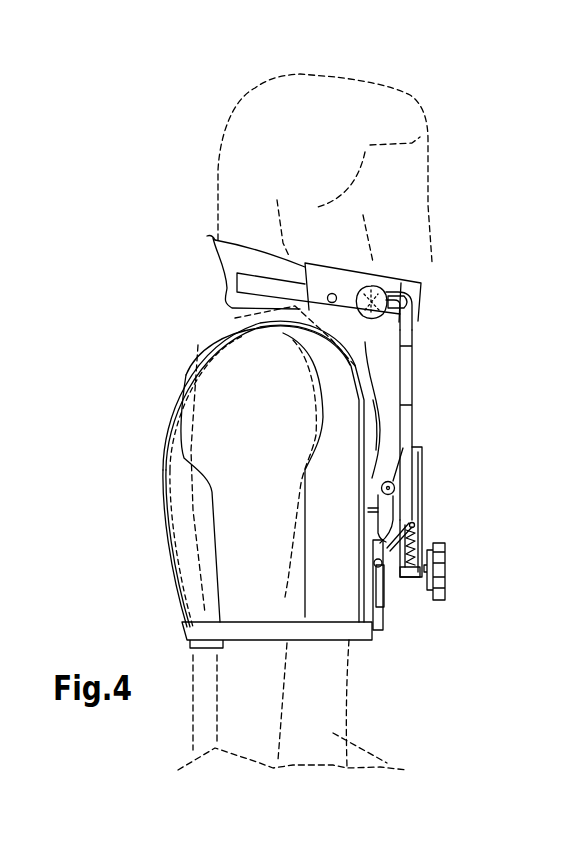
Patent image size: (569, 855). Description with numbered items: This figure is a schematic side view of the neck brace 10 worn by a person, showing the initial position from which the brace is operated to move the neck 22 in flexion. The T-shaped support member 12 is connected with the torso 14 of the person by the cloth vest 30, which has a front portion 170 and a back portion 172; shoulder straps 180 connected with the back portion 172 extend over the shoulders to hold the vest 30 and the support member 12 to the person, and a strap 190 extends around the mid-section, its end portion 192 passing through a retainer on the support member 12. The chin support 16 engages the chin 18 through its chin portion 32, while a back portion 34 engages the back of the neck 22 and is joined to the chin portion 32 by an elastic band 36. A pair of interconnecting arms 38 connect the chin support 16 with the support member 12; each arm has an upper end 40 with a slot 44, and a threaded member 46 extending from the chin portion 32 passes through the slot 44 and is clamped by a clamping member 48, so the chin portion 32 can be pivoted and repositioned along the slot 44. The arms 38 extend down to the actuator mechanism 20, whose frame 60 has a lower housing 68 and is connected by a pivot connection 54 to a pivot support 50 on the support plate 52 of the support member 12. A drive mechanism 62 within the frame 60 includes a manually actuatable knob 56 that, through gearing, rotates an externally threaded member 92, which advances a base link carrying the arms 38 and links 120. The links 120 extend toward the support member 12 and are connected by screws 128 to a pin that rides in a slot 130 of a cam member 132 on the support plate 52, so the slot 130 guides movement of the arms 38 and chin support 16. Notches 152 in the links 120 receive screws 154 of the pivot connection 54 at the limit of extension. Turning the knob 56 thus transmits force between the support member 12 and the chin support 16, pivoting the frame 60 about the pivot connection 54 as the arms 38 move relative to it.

The neck brace 10 is at (460, 268).
The T-shaped support member 12 is at (375, 638).
The torso 14 is at (396, 770).
The chin support 16 is at (423, 307).
The chin 18 is at (422, 272).
The actuator mechanism 20 is at (490, 548).
The neck 22 is at (235, 318).
The cloth vest 30 is at (193, 578).
The chin portion 32 is at (422, 292).
The back portion 34 is at (222, 243).
The elastic band 36 is at (262, 286).
The interconnecting arms 38 is at (413, 373).
The upper end 40 is at (413, 327).
The slot 44 is at (380, 288).
The threaded member 46 is at (371, 284).
The clamping member 48 is at (348, 262).
The pivot support 50 is at (368, 420).
The support plate 52 is at (380, 630).
The pivot connection 54 is at (406, 473).
The manually actuatable knob 56 is at (444, 550).
The frame 60 is at (422, 450).
The drive mechanism 62 is at (453, 581).
The lower housing 68 is at (413, 578).
The externally threaded member 92 is at (421, 541).
The links 120 is at (368, 547).
The screws 128 is at (370, 566).
The slot 130 is at (375, 510).
The cam member 132 is at (370, 593).
The notches 152 is at (368, 514).
The screws 154 is at (384, 484).
The front portion 170 is at (377, 575).
The back portion 172 is at (180, 511).
The shoulder straps 180 is at (178, 414).
The strap 190 is at (297, 640).
The end portion 192 is at (353, 640).